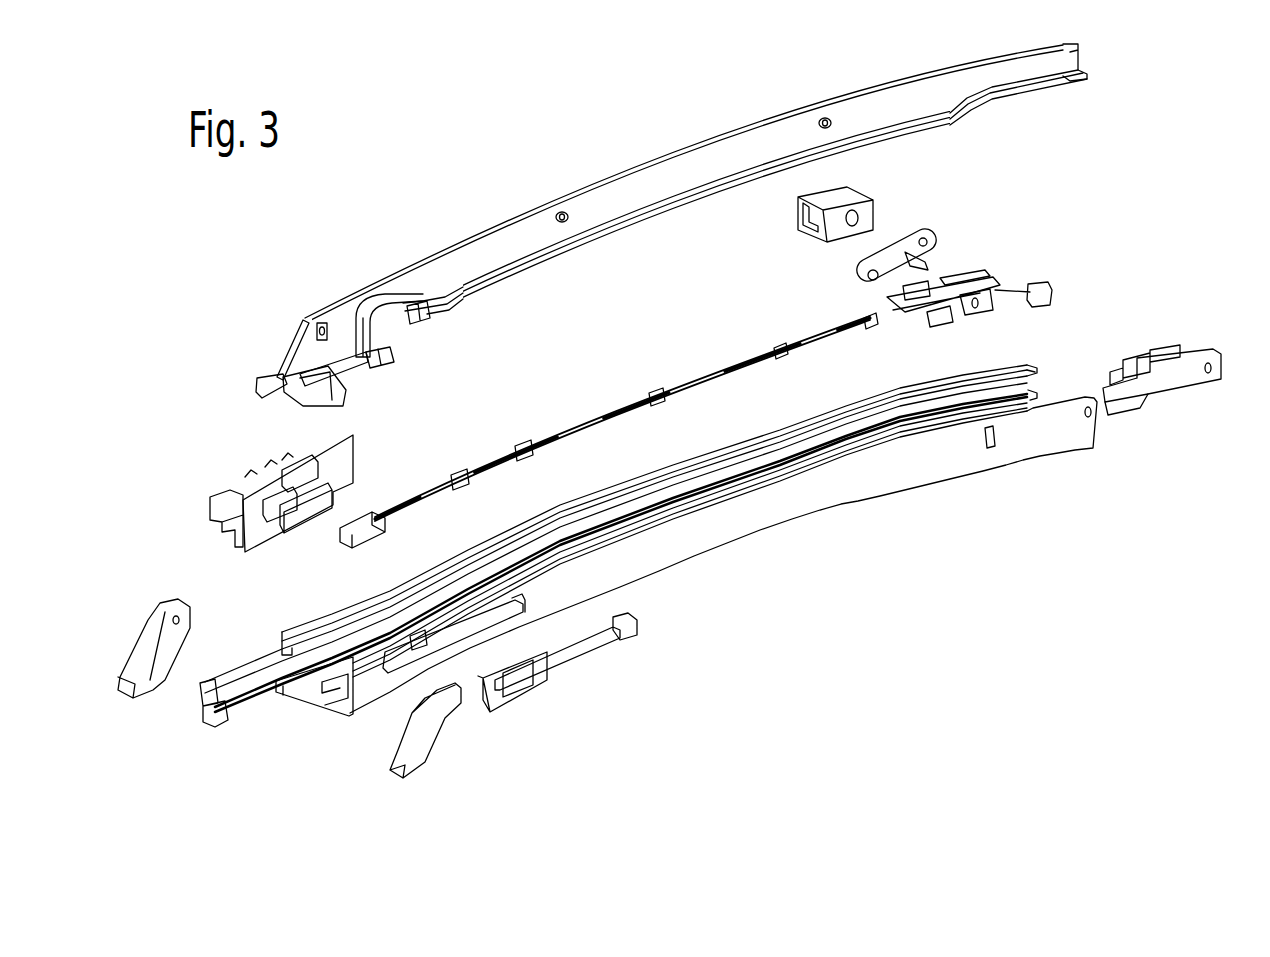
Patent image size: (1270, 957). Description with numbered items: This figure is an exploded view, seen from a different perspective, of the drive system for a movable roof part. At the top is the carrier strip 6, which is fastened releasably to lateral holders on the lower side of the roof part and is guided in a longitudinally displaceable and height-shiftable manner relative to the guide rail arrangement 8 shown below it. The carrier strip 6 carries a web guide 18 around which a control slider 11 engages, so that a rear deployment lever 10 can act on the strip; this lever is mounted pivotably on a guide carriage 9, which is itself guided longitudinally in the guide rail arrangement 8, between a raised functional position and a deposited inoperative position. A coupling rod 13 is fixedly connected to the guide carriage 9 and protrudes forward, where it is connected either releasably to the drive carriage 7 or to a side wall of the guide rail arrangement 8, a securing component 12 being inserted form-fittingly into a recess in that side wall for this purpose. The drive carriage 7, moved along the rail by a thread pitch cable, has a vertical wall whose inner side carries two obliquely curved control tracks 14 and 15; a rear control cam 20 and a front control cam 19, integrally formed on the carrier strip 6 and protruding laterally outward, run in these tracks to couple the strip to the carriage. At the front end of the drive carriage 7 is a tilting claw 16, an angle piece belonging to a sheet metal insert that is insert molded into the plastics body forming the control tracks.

The carrier strip 6 is at (647, 172).
The drive carriage 7 is at (347, 470).
The guide rail arrangement 8 is at (727, 543).
The guide carriage 9 is at (980, 270).
The rear deployment lever 10 is at (927, 257).
The control slider 11 is at (873, 213).
The securing component 12 is at (1168, 383).
The coupling rod 13 is at (580, 416).
The control track 14 is at (280, 467).
The control track 15 is at (258, 477).
The tilting claw 16 is at (210, 505).
The web guide 18 is at (663, 221).
The front control cam 19 is at (392, 368).
The rear control cam 20 is at (422, 316).